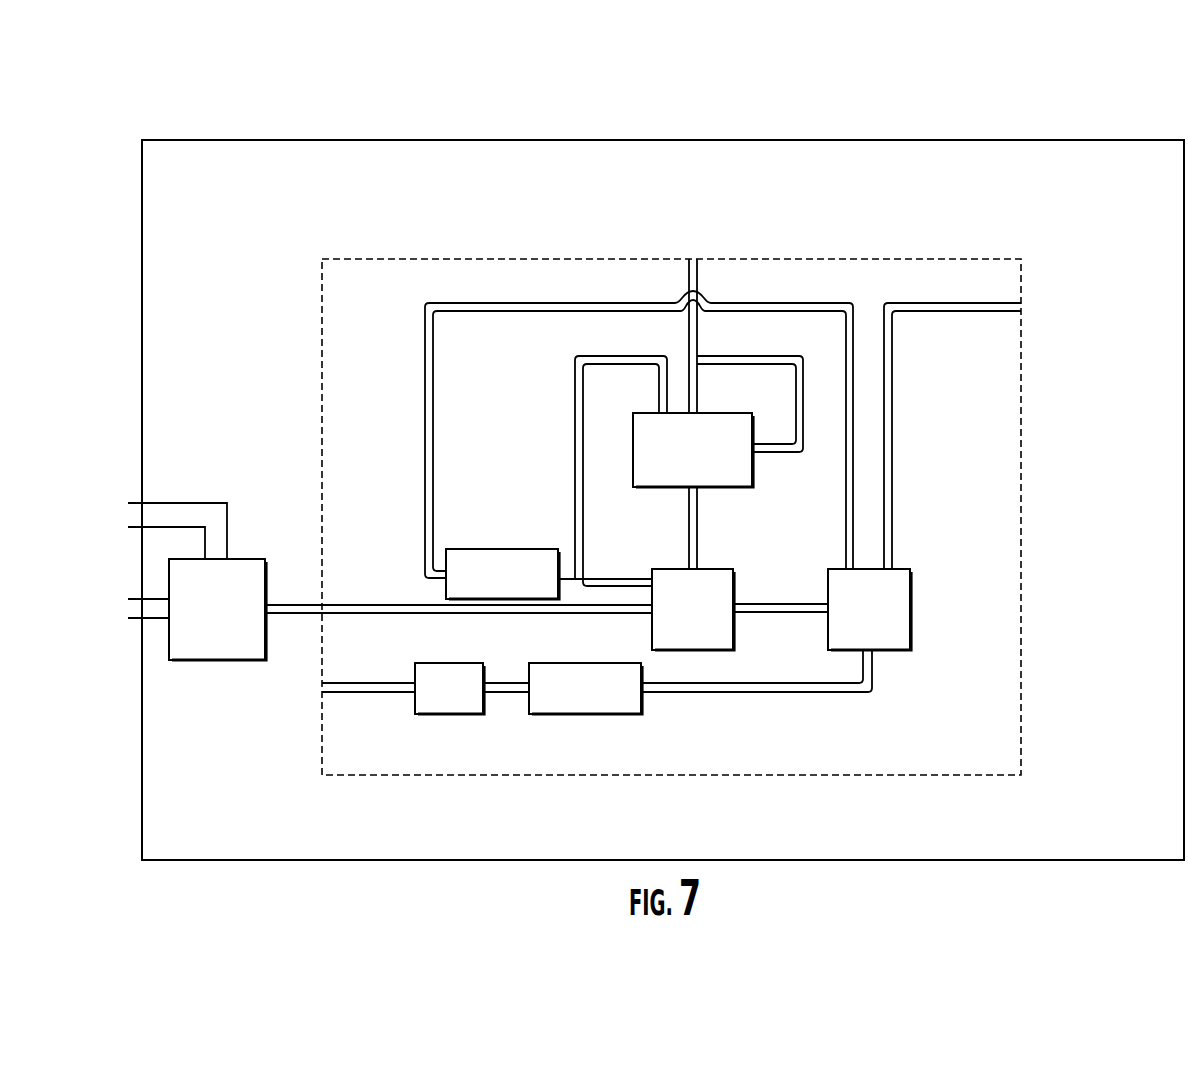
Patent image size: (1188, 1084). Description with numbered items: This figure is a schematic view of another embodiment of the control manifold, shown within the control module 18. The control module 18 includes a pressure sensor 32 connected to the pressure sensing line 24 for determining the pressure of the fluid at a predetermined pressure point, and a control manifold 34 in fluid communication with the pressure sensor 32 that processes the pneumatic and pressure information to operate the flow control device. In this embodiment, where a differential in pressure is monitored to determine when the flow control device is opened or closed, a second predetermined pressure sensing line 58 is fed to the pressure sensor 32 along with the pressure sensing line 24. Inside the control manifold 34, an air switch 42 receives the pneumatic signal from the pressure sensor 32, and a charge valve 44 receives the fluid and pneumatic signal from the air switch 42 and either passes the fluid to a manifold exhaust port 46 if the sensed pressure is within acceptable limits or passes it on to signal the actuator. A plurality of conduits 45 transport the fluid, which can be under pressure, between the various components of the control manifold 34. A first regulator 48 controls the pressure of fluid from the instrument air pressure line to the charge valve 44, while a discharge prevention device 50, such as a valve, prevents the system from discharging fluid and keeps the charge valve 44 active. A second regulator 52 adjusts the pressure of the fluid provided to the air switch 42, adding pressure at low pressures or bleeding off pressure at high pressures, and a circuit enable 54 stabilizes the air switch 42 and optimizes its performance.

The control module 18 is at (997, 140).
The pressure sensing line 24 is at (128, 620).
The pressure sensor 32 is at (250, 559).
The control manifold 34 is at (912, 259).
The air switch 42 is at (706, 569).
The charge valve 44 is at (910, 598).
The conduits 45 is at (490, 303).
The manifold exhaust port 46 is at (697, 275).
The first regulator 48 is at (600, 714).
The discharge prevention device 50 is at (458, 714).
The second regulator 52 is at (512, 549).
The circuit enable 54 is at (752, 479).
The second predetermined pressure sensing line 58 is at (183, 503).